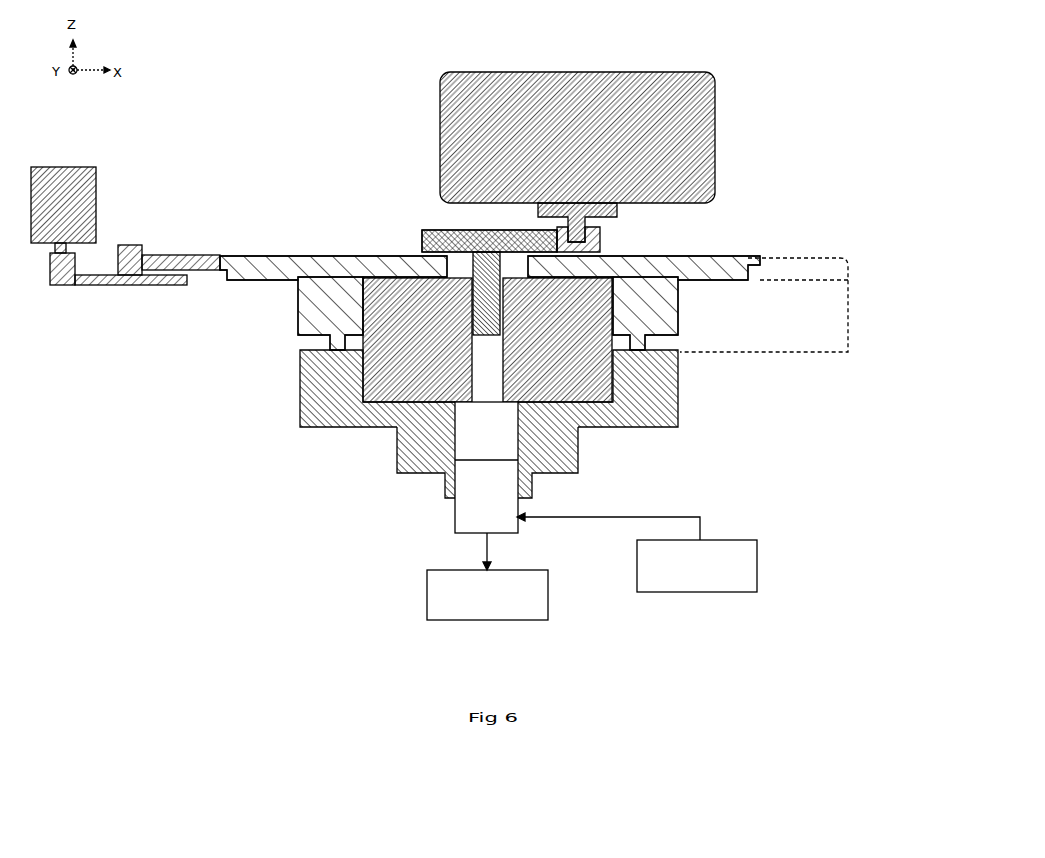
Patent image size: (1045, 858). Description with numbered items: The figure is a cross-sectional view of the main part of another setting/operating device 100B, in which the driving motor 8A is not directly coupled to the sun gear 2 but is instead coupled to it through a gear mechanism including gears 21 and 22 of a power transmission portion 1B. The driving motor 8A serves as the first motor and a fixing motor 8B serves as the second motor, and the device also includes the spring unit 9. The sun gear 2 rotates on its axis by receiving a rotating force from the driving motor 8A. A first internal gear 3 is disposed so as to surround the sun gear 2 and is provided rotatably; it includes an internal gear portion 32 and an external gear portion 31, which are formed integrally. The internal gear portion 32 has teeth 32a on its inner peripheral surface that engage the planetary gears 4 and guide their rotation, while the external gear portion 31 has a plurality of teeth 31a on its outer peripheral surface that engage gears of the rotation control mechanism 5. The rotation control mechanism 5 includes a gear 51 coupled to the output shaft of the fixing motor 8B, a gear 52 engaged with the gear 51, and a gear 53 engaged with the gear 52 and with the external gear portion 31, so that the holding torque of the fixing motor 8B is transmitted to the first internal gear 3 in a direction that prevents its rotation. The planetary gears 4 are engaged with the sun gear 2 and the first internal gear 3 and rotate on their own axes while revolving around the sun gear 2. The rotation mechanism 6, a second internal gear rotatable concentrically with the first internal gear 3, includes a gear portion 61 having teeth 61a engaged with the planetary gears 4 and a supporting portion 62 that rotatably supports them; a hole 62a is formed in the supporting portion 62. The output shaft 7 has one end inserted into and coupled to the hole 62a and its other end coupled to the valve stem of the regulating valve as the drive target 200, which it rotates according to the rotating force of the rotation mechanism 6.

The setting/operating device 100B is at (898, 57).
The power transmission portion 1B is at (757, 242).
The sun gear 2 is at (450, 273).
The gear 21 is at (440, 231).
The gear 22 is at (600, 243).
The first internal gear 3 is at (554, 284).
The external gear portion 31 is at (848, 262).
The teeth 31a is at (760, 271).
The internal gear portion 32 is at (848, 306).
The teeth 32a is at (678, 322).
The planetary gears 4 is at (347, 363).
The rotation control mechanism 5 is at (135, 314).
The gear 51 is at (60, 290).
The gear 52 is at (128, 288).
The gear 53 is at (181, 307).
The rotation mechanism 6 is at (512, 424).
The gear portion 61 is at (613, 386).
The teeth 61a is at (397, 395).
The supporting portion 62 is at (578, 437).
The hole 62a is at (468, 437).
The output shaft 7 is at (455, 520).
The driving motor 8A is at (576, 72).
The fixing motor 8B is at (65, 167).
The spring unit 9 is at (760, 566).
The drive target 200 is at (427, 588).